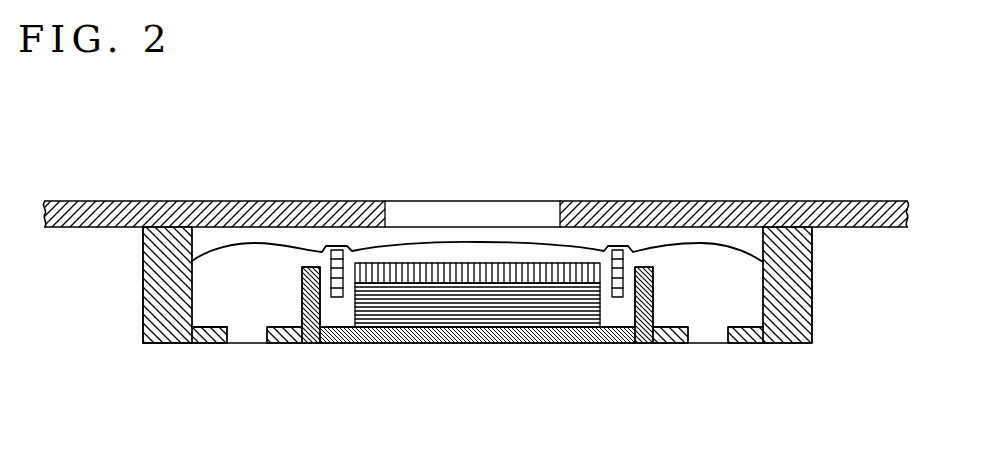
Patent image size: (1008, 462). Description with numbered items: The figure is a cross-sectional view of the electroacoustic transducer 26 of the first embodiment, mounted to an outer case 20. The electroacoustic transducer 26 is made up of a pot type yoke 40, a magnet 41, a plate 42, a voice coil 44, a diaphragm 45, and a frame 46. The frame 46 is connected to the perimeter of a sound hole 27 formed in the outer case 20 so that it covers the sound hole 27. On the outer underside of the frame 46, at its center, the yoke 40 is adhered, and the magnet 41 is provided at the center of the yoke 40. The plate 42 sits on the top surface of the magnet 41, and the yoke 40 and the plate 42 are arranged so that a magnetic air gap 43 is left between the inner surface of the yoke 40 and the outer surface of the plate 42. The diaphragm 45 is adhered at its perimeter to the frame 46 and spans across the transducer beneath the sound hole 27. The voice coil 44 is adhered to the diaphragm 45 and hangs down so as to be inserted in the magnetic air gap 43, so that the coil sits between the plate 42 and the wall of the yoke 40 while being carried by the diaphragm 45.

The outer case 20 is at (142, 201).
The electroacoustic transducer 26 is at (825, 340).
The sound hole 27 is at (530, 210).
The pot type yoke 40 is at (570, 340).
The magnet 41 is at (463, 317).
The plate 42 is at (437, 277).
The magnetic air gap 43 is at (630, 265).
The voice coil 44 is at (340, 248).
The diaphragm 45 is at (693, 240).
The frame 46 is at (165, 337).